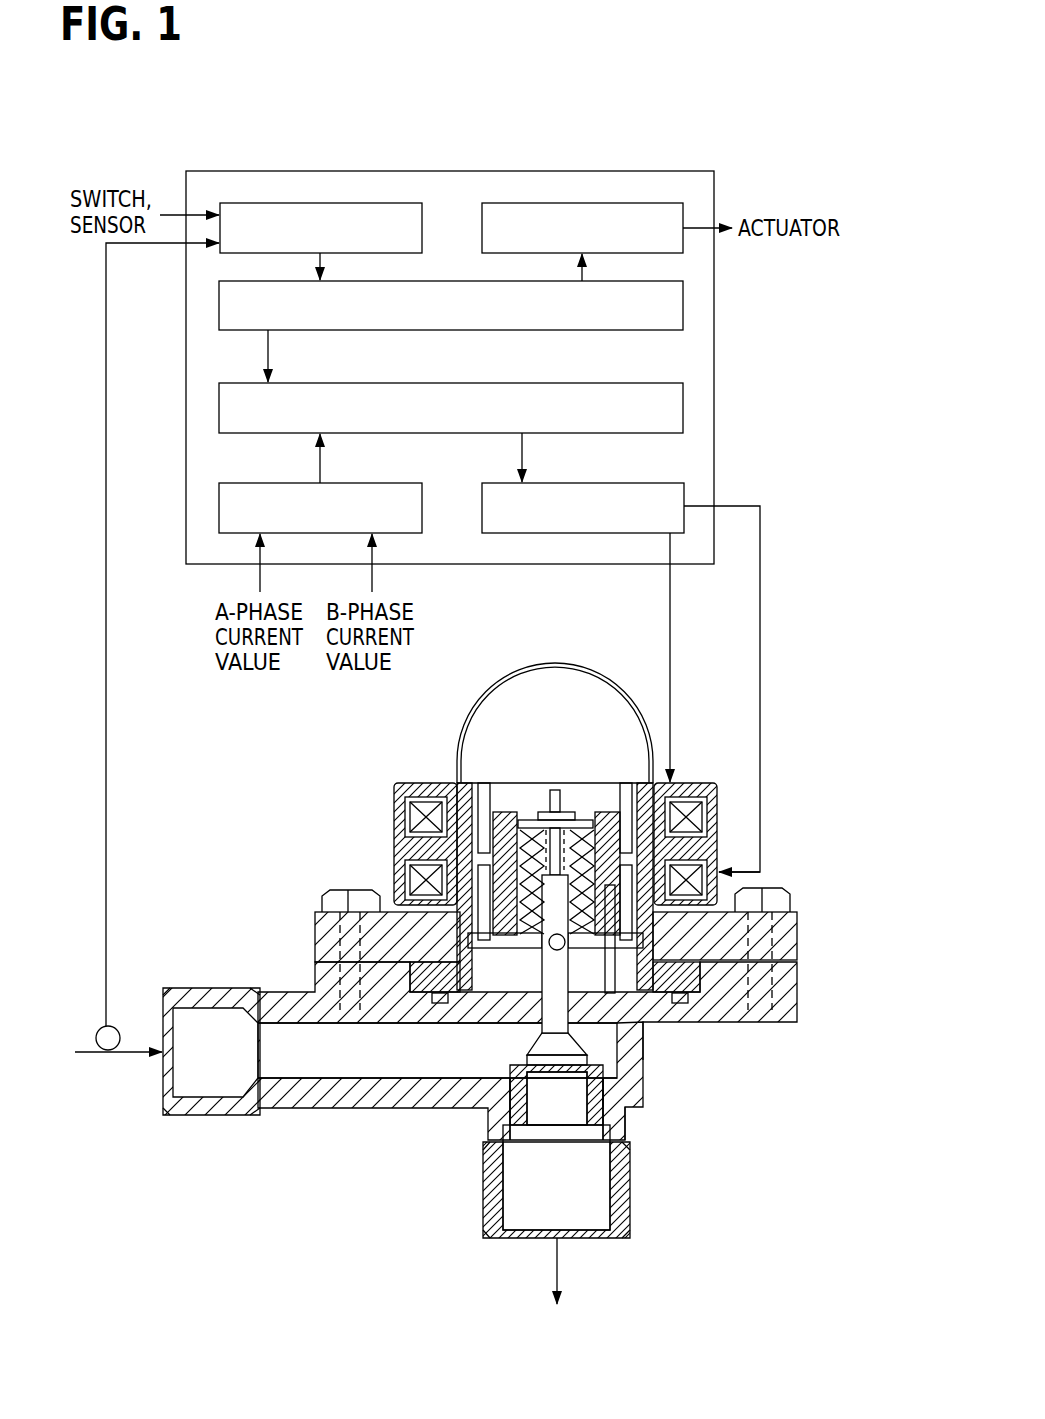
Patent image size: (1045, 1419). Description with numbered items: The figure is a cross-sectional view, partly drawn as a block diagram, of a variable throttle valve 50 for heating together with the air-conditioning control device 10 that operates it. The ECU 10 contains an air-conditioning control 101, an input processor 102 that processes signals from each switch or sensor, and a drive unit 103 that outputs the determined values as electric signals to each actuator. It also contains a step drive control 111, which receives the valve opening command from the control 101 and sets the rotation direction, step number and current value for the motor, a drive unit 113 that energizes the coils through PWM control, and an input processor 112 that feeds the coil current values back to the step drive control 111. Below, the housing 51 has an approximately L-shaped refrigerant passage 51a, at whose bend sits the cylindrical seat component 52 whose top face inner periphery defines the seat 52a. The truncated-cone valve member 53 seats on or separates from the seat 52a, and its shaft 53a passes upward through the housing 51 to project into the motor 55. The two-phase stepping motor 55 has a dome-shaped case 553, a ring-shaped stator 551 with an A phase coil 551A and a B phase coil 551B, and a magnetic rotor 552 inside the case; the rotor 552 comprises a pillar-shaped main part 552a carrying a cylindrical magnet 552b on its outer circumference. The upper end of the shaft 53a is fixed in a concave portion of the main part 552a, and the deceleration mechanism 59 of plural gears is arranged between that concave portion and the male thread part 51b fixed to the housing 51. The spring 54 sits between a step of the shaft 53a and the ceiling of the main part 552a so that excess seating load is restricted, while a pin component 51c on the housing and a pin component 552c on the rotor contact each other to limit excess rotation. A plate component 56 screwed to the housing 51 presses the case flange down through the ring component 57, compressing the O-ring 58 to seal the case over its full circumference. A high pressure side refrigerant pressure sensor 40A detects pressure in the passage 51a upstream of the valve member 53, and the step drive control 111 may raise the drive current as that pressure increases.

The air-conditioning control device 10 is at (686, 168).
The air-conditioning control 101 is at (683, 301).
The input processor 102 is at (293, 203).
The drive unit 103 is at (563, 203).
The step drive control 111 is at (683, 403).
The input processor 112 is at (219, 506).
The drive unit 113 is at (684, 490).
The high pressure side refrigerant pressure sensor 40A is at (105, 1026).
The variable throttle valve 50 is at (468, 1083).
The housing 51 is at (358, 1092).
The refrigerant passage 51a is at (305, 1065).
The male thread part 51b is at (456, 1075).
The pin component 51c is at (602, 1024).
The seat component 52 is at (516, 1110).
The seat 52a is at (590, 1082).
The valve member 53 is at (572, 1060).
The shaft 53a is at (632, 1060).
The spring 54 is at (609, 888).
The motor 55 is at (511, 833).
The stator 551 is at (489, 794).
The A phase coil 551A is at (408, 817).
The B phase coil 551B is at (408, 878).
The rotor 552 is at (555, 853).
The main part 552a is at (614, 868).
The cylindrical magnet 552b is at (479, 868).
The pin component 552c is at (664, 904).
The case 553 is at (482, 691).
The plate component 56 is at (322, 926).
The ring component 57 is at (436, 968).
The O-ring 58 is at (434, 1000).
The deceleration mechanism 59 is at (526, 870).